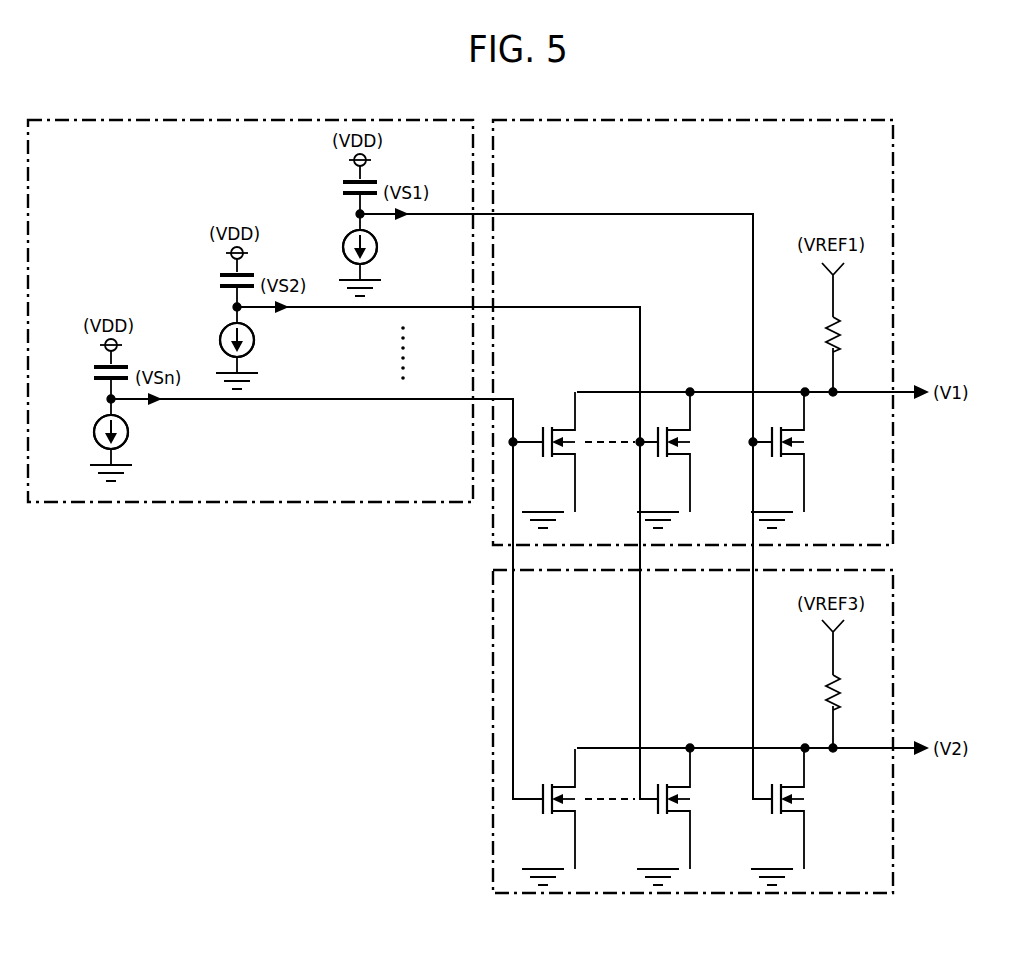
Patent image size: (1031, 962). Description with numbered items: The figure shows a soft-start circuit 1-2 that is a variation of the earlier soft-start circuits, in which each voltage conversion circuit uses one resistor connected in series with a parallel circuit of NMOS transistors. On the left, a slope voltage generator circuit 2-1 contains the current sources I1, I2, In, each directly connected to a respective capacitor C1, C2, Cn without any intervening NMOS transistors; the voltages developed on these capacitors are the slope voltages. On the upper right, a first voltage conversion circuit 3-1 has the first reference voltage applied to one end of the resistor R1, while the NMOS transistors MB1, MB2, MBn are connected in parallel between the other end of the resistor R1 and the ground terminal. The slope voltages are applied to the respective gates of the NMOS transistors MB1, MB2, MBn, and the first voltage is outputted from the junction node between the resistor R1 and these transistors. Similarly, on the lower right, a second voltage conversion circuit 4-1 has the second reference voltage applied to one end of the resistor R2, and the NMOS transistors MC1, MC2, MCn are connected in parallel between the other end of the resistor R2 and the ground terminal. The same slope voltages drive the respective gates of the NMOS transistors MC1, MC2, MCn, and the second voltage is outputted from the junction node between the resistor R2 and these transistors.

The slope voltage generator circuit 2-1 is at (330, 512).
The first voltage conversion circuit 3-1 is at (898, 180).
The second voltage conversion circuit 4-1 is at (898, 598).
The soft-start circuit 1-2 is at (964, 226).
The current source I1 is at (350, 225).
The current source I2 is at (227, 318).
The current source In is at (102, 410).
The capacitor C1 is at (342, 247).
The capacitor C2 is at (219, 340).
The capacitor Cn is at (93, 432).
The NMOS transistor MB1 is at (798, 460).
The NMOS transistor MB2 is at (684, 460).
The NMOS transistor MBn is at (548, 460).
The NMOS transistor MC1 is at (798, 817).
The NMOS transistor MC2 is at (684, 817).
The NMOS transistor MCn is at (548, 817).
The resistor R1 is at (845, 327).
The resistor R2 is at (845, 684).